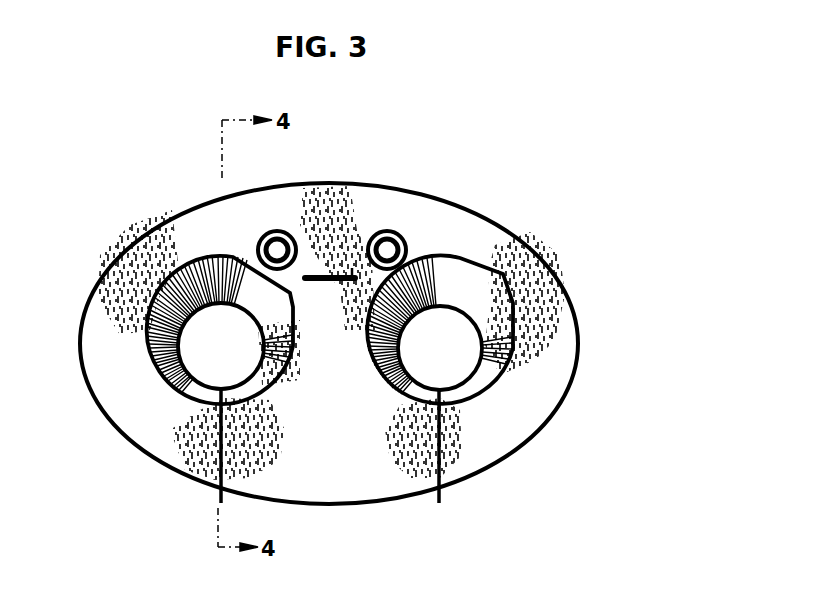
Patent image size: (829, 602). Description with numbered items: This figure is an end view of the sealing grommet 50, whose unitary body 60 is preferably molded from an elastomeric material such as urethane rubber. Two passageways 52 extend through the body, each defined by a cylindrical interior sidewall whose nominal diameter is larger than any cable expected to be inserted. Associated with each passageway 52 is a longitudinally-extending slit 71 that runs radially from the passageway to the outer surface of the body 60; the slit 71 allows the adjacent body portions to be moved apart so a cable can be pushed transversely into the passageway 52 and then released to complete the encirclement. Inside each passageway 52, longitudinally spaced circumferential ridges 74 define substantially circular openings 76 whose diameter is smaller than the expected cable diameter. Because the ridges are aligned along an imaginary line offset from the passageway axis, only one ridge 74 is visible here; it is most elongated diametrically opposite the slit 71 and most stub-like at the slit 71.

The sealing grommet 50 is at (434, 207).
The passageway 52 is at (147, 313).
The unitary body 60 is at (550, 391).
The slit 71 is at (222, 475).
The circumferential ridge 74 is at (172, 270).
The circular opening 76 is at (442, 392).